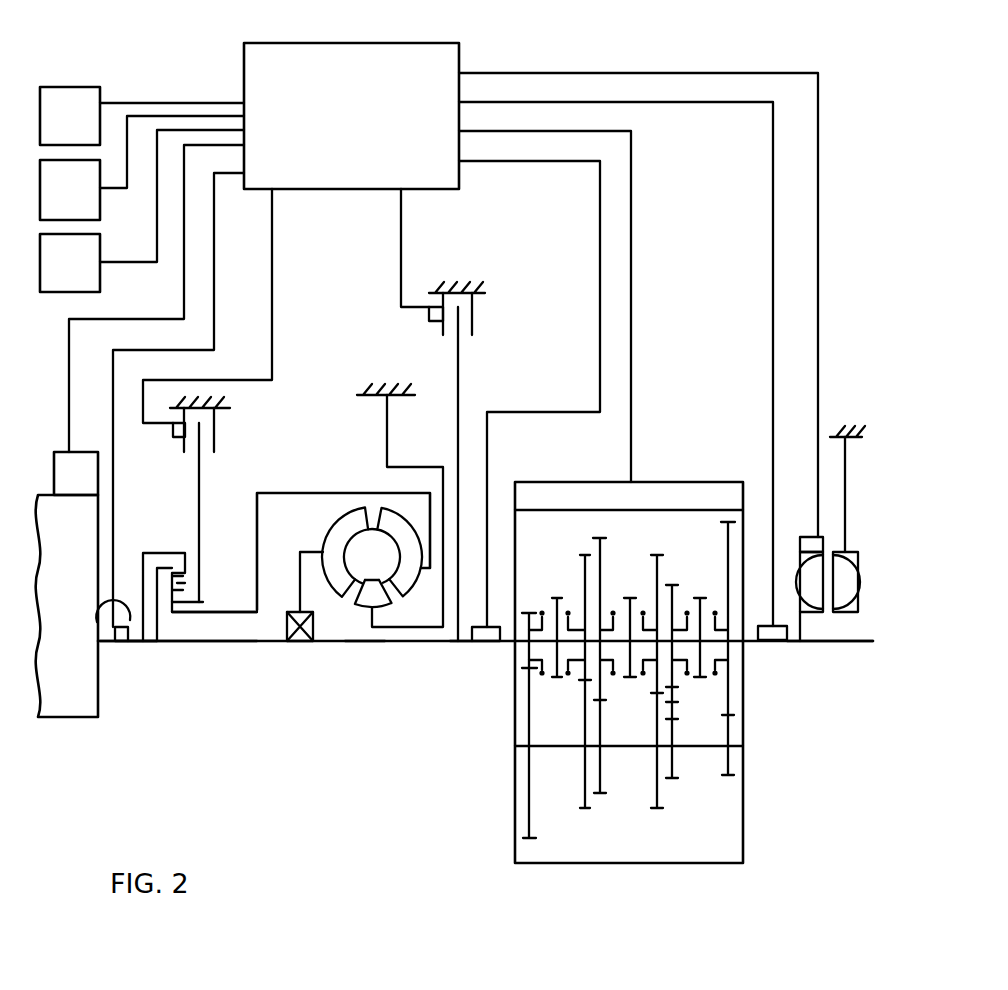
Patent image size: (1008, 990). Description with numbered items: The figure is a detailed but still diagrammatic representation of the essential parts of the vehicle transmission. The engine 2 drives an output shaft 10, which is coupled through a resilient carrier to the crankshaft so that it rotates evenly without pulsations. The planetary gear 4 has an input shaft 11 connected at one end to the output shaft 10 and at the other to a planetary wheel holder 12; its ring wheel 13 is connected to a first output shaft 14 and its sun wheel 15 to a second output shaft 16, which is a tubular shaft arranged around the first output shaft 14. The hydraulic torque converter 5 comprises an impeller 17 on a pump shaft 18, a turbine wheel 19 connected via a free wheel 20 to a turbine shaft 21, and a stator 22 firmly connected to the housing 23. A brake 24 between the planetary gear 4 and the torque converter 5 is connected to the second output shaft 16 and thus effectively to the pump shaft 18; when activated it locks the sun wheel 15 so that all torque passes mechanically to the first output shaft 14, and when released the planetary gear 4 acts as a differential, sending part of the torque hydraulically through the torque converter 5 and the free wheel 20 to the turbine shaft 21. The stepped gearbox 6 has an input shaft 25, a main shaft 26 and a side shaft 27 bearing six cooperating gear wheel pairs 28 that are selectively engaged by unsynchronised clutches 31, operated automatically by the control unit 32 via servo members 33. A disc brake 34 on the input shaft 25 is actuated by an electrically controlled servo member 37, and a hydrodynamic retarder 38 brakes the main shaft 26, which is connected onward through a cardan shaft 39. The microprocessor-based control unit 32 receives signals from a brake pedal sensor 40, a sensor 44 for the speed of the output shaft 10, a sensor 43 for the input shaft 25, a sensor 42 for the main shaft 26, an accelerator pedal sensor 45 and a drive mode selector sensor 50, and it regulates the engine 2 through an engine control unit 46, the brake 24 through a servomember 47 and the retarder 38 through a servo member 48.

The engine 2 is at (36, 637).
The planetary gear 4 is at (150, 688).
The hydraulic torque converter 5 is at (349, 484).
The stepped gearbox 6 is at (516, 774).
The output shaft 10 is at (116, 645).
The input shaft 11 is at (138, 645).
The planetary wheel holder 12 is at (196, 566).
The ring wheel 13 is at (172, 575).
The first output shaft 14 is at (262, 645).
The sun wheel 15 is at (206, 600).
The second output shaft 16 is at (204, 626).
The impeller 17 is at (410, 590).
The pump shaft 18 is at (250, 627).
The turbine wheel 19 is at (338, 531).
The free wheel 20 is at (298, 645).
The turbine shaft 21 is at (357, 645).
The stator 22 is at (367, 607).
The housing 23 is at (372, 397).
The brake 24 is at (216, 432).
The input shaft 25 is at (466, 645).
The main shaft 26 is at (660, 643).
The side shaft 27 is at (705, 750).
The gear wheel pairs 28 is at (531, 792).
The clutches 31 is at (557, 600).
The control unit 32 is at (336, 110).
The servo members 33 is at (673, 498).
The brake 34 is at (473, 318).
The servo member 37 is at (429, 315).
The hydrodynamic retarder 38 is at (830, 622).
The cardan shaft 39 is at (822, 645).
The sensor 40 is at (58, 276).
The sensor 42 is at (772, 645).
The sensor 43 is at (485, 645).
The sensor 44 is at (97, 625).
The sensor 45 is at (58, 203).
The engine control unit 46 is at (75, 496).
The servomember 47 is at (173, 431).
The servo member 48 is at (810, 537).
The sensor 50 is at (58, 129).